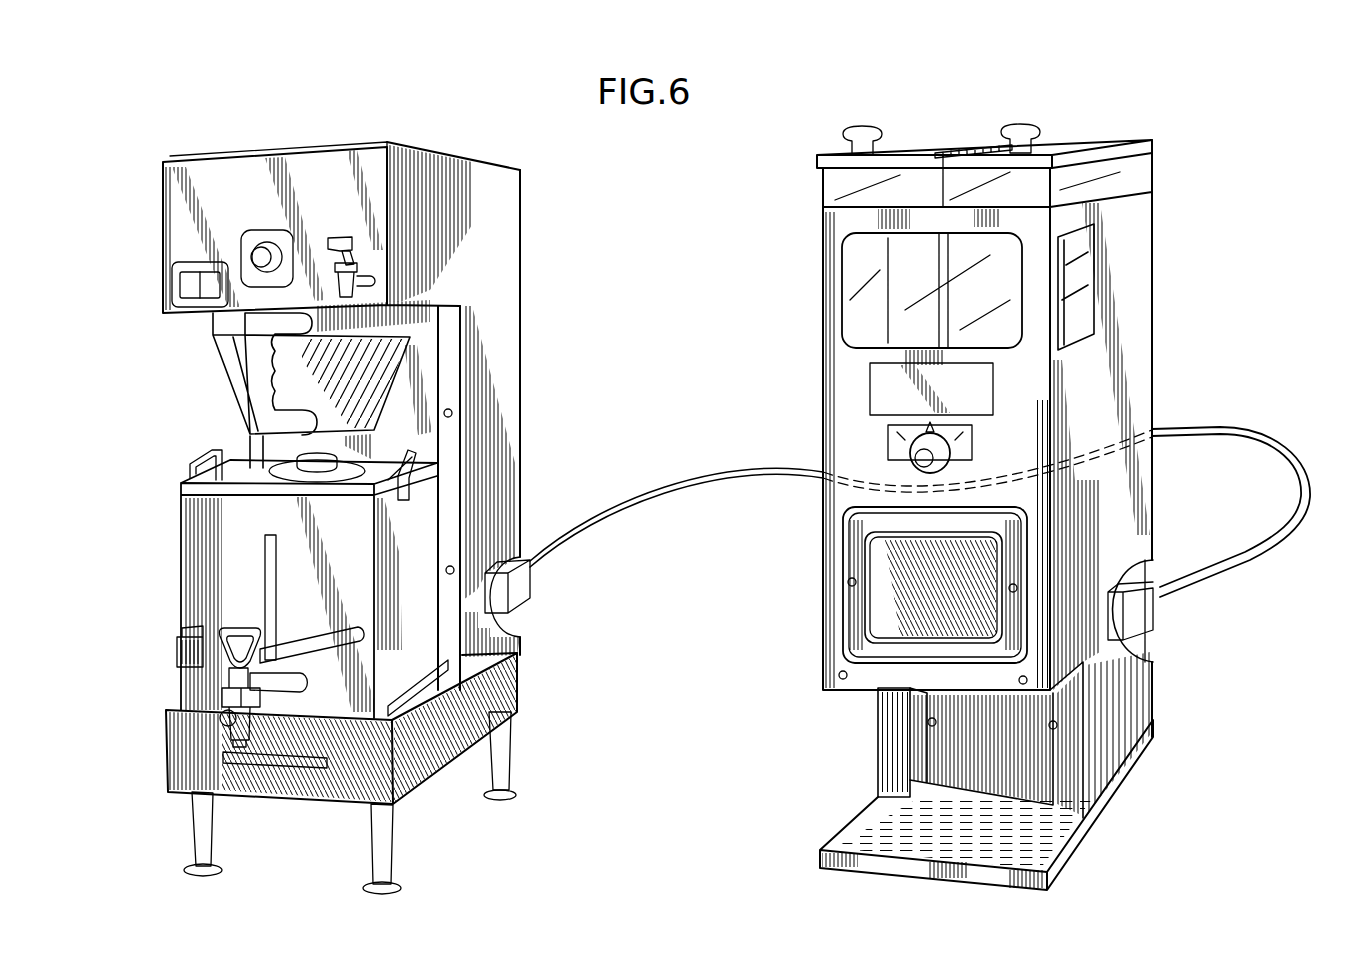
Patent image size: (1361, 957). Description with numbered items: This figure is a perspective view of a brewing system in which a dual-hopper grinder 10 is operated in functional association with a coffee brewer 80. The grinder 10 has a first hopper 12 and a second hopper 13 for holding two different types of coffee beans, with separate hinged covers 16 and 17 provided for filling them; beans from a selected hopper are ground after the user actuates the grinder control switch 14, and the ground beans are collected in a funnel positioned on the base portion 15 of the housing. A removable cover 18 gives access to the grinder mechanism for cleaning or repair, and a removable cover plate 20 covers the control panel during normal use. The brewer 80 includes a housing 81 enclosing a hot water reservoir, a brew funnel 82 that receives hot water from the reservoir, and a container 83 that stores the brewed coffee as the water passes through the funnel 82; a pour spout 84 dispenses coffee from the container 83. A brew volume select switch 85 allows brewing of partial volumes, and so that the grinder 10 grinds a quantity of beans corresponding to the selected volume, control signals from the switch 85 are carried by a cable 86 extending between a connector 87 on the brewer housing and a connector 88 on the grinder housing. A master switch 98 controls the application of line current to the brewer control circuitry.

The dual-hopper grinder 10 is at (1160, 220).
The first hopper 12 is at (862, 310).
The second hopper 13 is at (1012, 315).
The grinder control switch 14 is at (882, 470).
The base portion 15 is at (1050, 833).
The hinged cover 16 is at (908, 150).
The hinged cover 17 is at (1090, 143).
The removable cover 18 is at (843, 632).
The removable cover plate 20 is at (947, 757).
The coffee brewer 80 is at (504, 390).
The housing 81 is at (503, 215).
The brew funnel 82 is at (288, 365).
The container 83 is at (200, 560).
The pour spout 84 is at (218, 700).
The brew volume select switch 85 is at (268, 242).
The cable 86 is at (670, 496).
The connector 87 is at (500, 593).
The connector 88 is at (1130, 615).
The master switch 98 is at (175, 282).